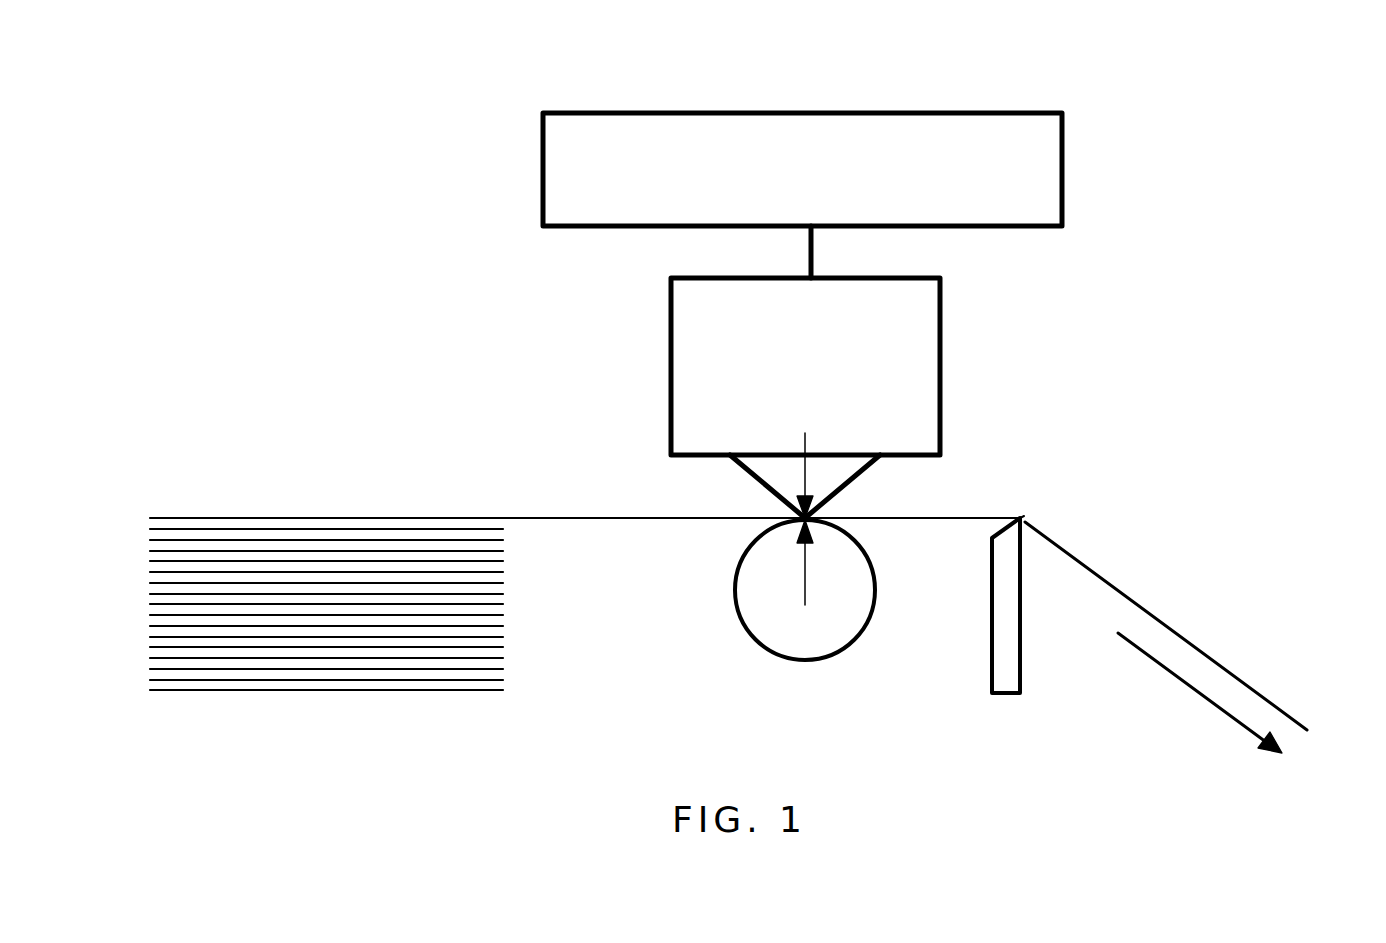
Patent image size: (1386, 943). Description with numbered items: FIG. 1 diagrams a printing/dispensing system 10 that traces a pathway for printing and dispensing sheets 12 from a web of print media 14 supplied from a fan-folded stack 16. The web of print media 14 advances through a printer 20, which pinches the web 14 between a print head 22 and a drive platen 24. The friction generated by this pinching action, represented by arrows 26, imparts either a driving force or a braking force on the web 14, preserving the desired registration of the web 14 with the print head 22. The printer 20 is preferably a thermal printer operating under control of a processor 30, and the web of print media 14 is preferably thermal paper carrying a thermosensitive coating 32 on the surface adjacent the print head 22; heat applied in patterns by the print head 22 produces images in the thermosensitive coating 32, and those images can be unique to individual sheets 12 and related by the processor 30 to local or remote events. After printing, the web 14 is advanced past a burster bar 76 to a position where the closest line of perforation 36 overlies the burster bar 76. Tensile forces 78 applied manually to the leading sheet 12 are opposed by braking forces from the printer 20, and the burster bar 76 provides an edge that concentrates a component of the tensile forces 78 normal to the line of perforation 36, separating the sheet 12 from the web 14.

The printing/dispensing system 10 is at (241, 171).
The sheets 12 is at (1275, 702).
The web of print media 14 is at (590, 520).
The fan-folded stack 16 is at (150, 565).
The printer 20 is at (832, 380).
The print head 22 is at (850, 485).
The drive platen 24 is at (756, 642).
The arrows 26 is at (805, 433).
The processor 30 is at (832, 190).
The thermosensitive coating 32 is at (535, 518).
The line of perforation 36 is at (1022, 516).
The burster bar 76 is at (988, 648).
The tensile forces 78 is at (1222, 710).